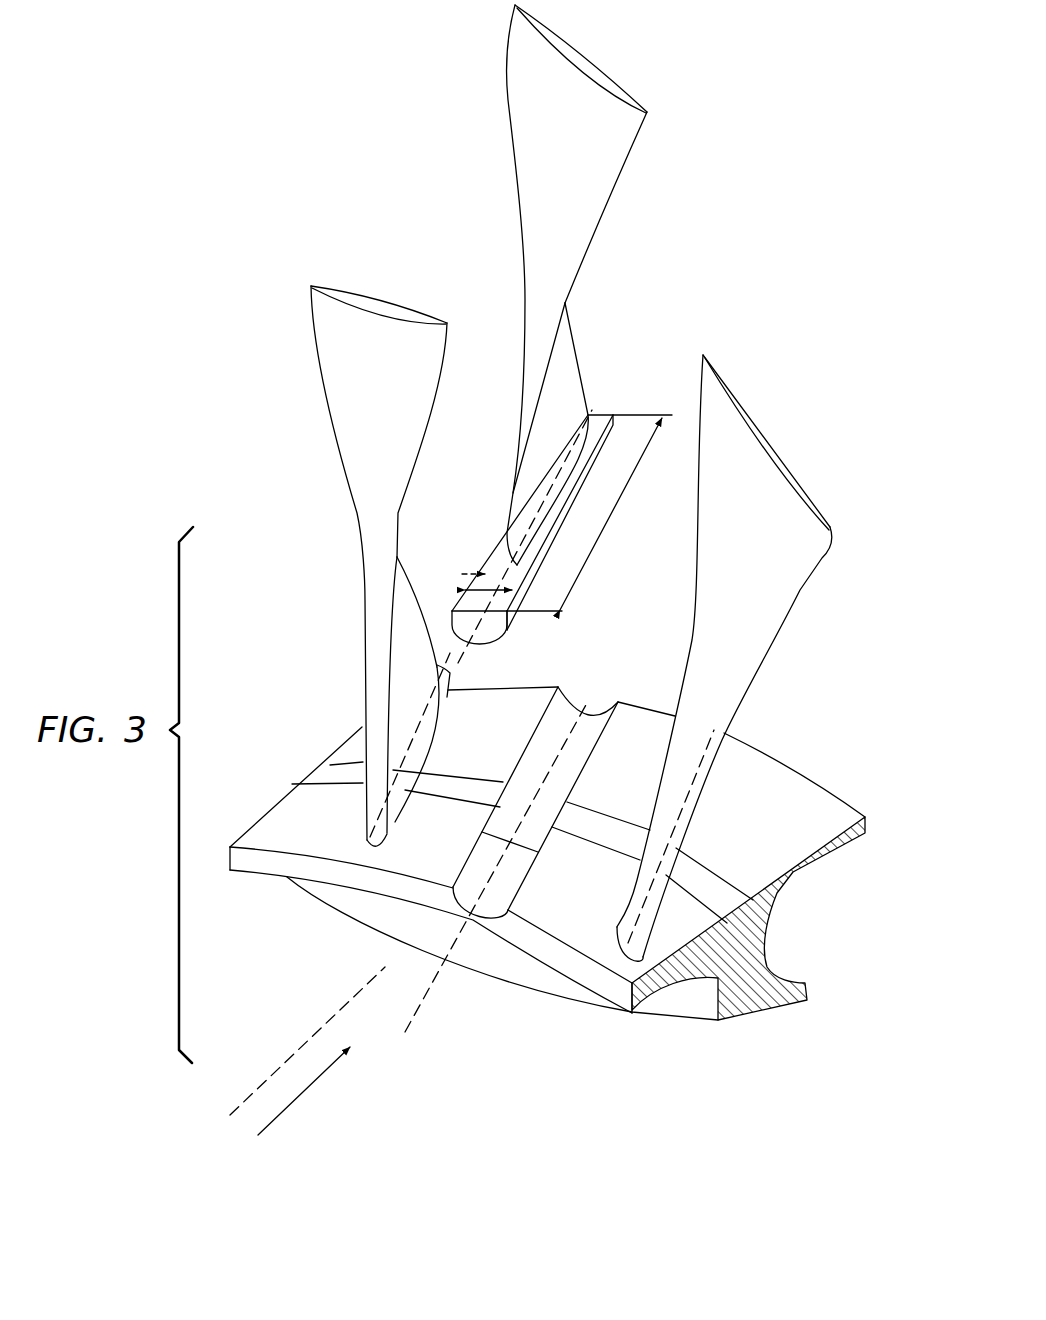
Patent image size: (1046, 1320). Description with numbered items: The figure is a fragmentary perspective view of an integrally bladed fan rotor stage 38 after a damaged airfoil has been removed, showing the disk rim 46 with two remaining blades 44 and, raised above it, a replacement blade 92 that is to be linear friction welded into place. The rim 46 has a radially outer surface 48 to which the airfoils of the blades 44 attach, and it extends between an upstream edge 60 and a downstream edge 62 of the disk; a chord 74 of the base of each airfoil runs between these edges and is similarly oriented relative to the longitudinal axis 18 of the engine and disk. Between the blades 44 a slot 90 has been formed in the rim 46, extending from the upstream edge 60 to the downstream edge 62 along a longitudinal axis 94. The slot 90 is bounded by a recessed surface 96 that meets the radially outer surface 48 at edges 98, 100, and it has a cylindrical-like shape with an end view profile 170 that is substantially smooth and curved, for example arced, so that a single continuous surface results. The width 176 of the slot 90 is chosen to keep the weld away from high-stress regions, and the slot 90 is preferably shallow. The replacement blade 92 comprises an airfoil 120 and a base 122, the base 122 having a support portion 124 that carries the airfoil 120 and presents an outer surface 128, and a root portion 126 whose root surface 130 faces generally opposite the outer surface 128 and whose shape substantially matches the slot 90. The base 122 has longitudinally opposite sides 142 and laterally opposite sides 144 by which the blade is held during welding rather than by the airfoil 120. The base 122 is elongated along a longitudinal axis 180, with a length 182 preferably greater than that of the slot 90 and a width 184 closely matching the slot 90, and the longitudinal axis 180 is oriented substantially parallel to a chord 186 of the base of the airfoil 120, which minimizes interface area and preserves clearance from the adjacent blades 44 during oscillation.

The longitudinal axis 18 is at (297, 1052).
The integrally bladed fan rotor stage 38 is at (695, 247).
The blades 44 is at (404, 299).
The outer rim 46 is at (253, 868).
The radially outer surface 48 is at (298, 807).
The upstream edge 60 is at (627, 995).
The downstream edge 62 is at (865, 817).
The chords 74 is at (420, 737).
The slot 90 is at (611, 684).
The replacement blade 92 is at (613, 70).
The longitudinal axis of the slot 94 is at (411, 1018).
The recessed surface 96 is at (462, 892).
The edge 98 is at (538, 852).
The edge 100 is at (483, 833).
The airfoil 120 is at (525, 192).
The base 122 is at (476, 548).
The support portion 124 is at (450, 609).
The root portion 126 is at (455, 650).
The outer surface 128 is at (495, 533).
The root surface 130 is at (507, 633).
The longitudinally opposite sides 142 is at (598, 412).
The laterally opposite sides 144 is at (478, 552).
The end view profile 170 is at (485, 920).
The width of the slot 176 is at (524, 822).
The longitudinal axis of the base 180 is at (460, 650).
The length of the base 182 is at (608, 518).
The width of the base 184 is at (500, 587).
The chord of the base of the airfoil 186 is at (512, 497).